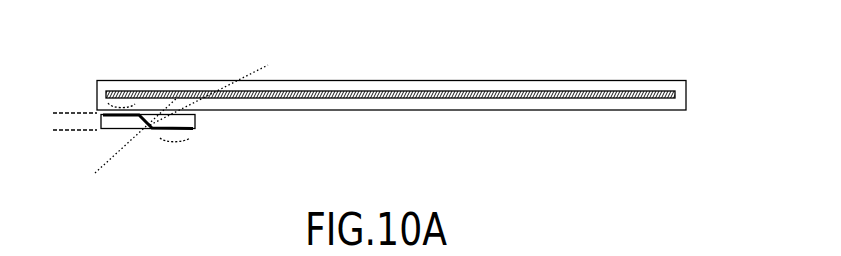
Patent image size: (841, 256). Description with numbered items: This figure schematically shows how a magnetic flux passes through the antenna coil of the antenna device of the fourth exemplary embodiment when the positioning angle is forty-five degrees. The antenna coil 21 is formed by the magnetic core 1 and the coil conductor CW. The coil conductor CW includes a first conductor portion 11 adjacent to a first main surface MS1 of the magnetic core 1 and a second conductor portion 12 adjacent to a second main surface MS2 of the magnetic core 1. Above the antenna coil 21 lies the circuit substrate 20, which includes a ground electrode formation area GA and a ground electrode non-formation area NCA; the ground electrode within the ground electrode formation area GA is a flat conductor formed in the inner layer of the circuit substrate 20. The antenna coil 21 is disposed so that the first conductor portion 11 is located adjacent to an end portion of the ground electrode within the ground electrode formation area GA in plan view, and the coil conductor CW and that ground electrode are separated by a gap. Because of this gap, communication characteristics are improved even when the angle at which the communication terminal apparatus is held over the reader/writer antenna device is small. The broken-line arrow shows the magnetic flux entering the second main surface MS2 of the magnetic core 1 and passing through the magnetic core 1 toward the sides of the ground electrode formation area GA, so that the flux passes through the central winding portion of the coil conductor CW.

The magnetic core 1 is at (197, 123).
The first conductor portion 11 is at (112, 97).
The second conductor portion 12 is at (148, 143).
The circuit substrate 20 is at (687, 81).
The antenna coil 21 is at (207, 134).
The ground electrode formation area GA is at (427, 90).
The non-contact area NCA is at (118, 89).
The first main surface MS1 is at (65, 113).
The second main surface MS2 is at (65, 130).
The coil conductor CW is at (150, 132).